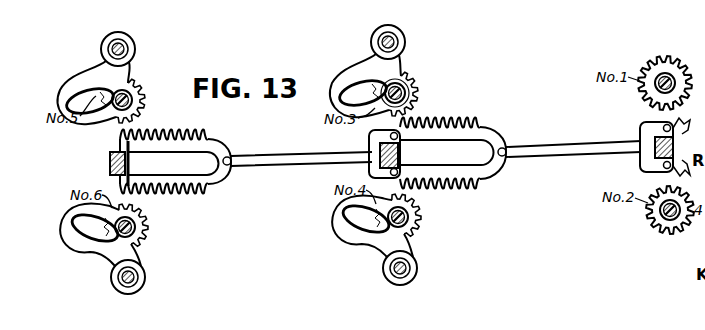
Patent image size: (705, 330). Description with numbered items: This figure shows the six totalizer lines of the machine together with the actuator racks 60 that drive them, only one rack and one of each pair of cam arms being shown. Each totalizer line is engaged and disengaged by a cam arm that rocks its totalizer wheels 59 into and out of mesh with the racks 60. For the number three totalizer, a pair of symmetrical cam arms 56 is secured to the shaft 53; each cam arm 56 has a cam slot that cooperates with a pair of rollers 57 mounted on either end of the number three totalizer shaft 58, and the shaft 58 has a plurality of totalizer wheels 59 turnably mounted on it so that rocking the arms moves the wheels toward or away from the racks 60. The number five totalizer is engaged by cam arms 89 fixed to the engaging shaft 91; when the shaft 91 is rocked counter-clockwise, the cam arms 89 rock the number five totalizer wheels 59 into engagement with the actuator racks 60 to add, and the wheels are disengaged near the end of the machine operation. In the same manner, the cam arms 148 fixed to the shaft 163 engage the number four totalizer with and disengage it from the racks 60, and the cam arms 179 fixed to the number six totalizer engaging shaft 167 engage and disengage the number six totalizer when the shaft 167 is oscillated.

The shaft 53 is at (398, 42).
The cam arm 56 is at (366, 62).
The roller 57 is at (404, 86).
The No. 3 totalizer shaft 58 is at (412, 102).
The totalizer wheel 59 is at (140, 84).
The actuator rack 60 is at (158, 132).
The cam arm 89 is at (98, 72).
The engaging shaft 91 is at (115, 47).
The cam arm 148 is at (378, 257).
The shaft 163 is at (409, 268).
The No. 6 totalizer engaging shaft 167 is at (137, 277).
The cam arm 179 is at (108, 258).